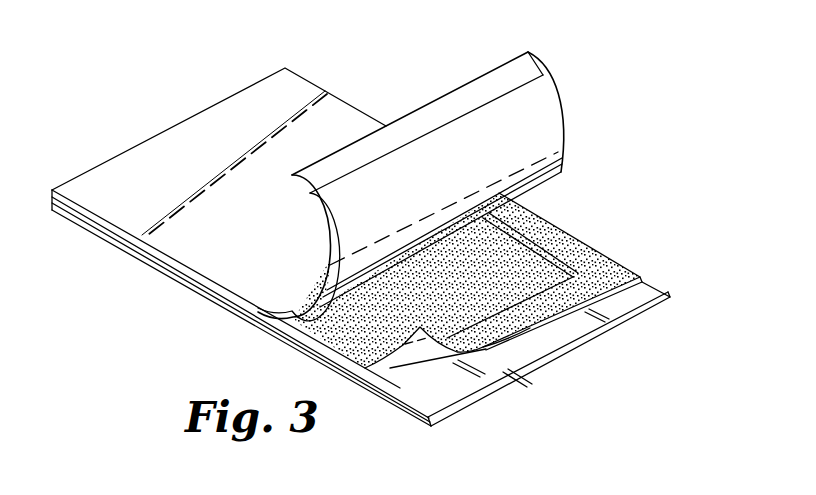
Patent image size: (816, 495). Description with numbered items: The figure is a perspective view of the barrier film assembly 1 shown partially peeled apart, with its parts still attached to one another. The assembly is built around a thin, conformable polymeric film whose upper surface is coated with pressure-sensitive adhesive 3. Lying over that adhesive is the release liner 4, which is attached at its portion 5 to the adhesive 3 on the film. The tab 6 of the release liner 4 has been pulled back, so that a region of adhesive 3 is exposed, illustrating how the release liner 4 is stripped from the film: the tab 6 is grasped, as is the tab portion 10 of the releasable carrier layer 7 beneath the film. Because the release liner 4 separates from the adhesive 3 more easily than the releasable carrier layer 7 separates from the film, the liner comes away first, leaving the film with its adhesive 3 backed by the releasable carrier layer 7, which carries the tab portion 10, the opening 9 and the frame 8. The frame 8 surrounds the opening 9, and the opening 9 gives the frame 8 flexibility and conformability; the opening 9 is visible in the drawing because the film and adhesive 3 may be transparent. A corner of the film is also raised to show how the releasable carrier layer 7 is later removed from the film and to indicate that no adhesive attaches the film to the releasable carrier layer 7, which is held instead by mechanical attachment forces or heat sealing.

The barrier film assembly 1 is at (408, 33).
The pressure-sensitive adhesive 3 is at (617, 264).
The release liner 4 is at (360, 103).
The portion 5 is at (550, 115).
The tab 6 is at (532, 62).
The releasable carrier layer 7 is at (466, 413).
The frame 8 is at (397, 387).
The opening 9 is at (547, 262).
The tab portion 10 is at (542, 347).